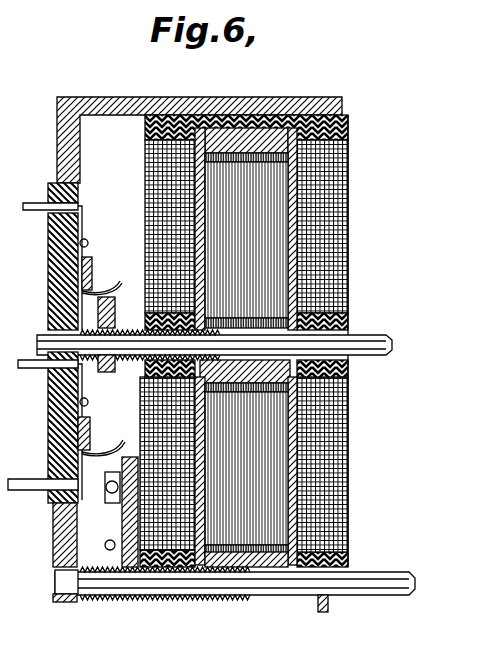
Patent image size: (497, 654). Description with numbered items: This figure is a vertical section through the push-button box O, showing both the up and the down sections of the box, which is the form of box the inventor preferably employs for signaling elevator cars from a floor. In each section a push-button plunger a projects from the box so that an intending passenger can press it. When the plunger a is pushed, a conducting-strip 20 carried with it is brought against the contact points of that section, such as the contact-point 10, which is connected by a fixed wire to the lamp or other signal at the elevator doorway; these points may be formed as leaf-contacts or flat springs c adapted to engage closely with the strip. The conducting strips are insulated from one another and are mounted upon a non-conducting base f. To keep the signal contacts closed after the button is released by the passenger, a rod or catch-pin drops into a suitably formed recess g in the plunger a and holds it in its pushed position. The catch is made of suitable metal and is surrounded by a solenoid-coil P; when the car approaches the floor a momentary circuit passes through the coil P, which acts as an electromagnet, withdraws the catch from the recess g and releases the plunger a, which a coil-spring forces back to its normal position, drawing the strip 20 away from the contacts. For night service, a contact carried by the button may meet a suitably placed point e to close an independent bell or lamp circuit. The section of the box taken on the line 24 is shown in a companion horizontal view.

The section line 24 is at (247, 48).
The push-button box O is at (250, 104).
The solenoid-coil P is at (254, 346).
The recess g is at (272, 606).
The push-button plunger a is at (244, 589).
The contact-point 10 is at (91, 291).
The leaf-contact or flat spring c is at (103, 362).
The non-conducting base f is at (115, 312).
The conducting-strip 20 is at (125, 450).
The contact-point e is at (104, 489).